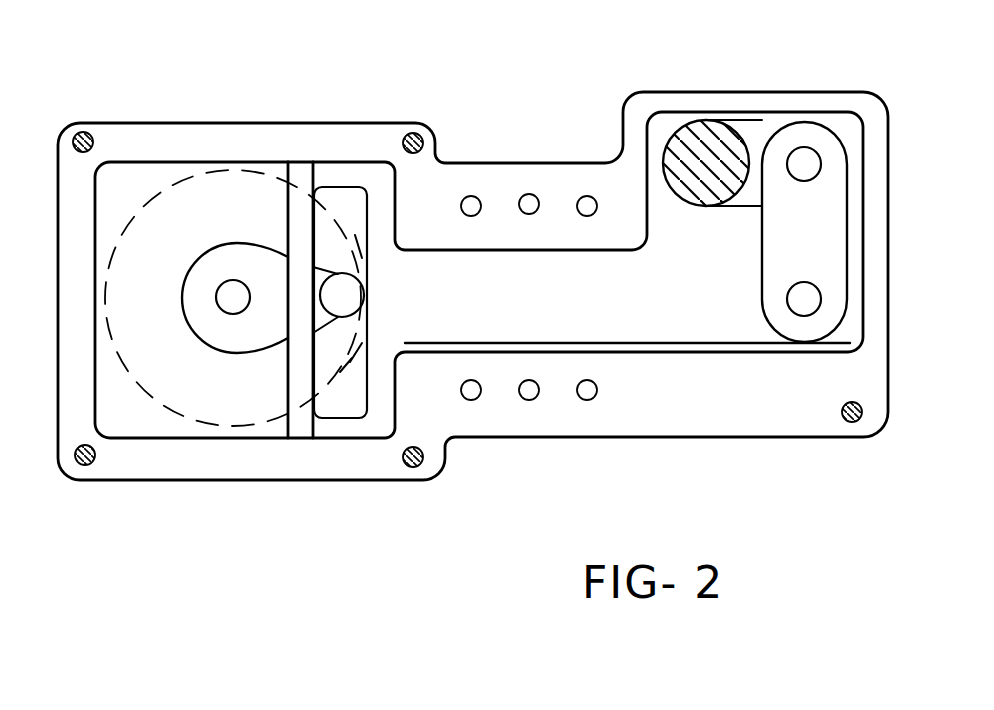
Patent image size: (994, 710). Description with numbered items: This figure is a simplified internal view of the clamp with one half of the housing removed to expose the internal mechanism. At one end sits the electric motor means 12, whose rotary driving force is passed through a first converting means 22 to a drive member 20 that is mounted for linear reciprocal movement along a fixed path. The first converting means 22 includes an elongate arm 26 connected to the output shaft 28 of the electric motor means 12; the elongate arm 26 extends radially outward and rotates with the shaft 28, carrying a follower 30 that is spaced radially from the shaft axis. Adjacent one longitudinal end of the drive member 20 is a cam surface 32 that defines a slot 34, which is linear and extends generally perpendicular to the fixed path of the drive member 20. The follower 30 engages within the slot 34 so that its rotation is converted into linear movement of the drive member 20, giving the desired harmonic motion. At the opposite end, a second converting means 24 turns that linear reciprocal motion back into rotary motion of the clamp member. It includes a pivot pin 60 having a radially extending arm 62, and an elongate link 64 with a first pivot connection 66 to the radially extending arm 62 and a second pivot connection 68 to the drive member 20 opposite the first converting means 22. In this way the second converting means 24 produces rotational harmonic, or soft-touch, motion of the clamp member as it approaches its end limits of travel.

The electric motor means 12 is at (167, 188).
The drive member 20 is at (490, 330).
The first converting means 22 is at (352, 206).
The second converting means 24 is at (853, 160).
The elongate arm 26 is at (250, 245).
The output shaft 28 is at (236, 281).
The follower 30 is at (338, 218).
The cam surface 32 is at (317, 390).
The slot 34 is at (362, 395).
The pivot pin 60 is at (672, 152).
The radially extending arm 62 is at (737, 121).
The elongate link 64 is at (850, 252).
The first pivot connection 66 is at (815, 150).
The second pivot connection 68 is at (803, 317).